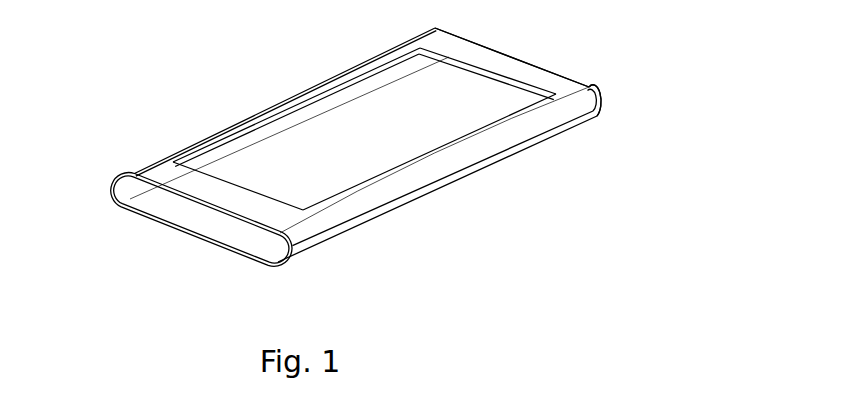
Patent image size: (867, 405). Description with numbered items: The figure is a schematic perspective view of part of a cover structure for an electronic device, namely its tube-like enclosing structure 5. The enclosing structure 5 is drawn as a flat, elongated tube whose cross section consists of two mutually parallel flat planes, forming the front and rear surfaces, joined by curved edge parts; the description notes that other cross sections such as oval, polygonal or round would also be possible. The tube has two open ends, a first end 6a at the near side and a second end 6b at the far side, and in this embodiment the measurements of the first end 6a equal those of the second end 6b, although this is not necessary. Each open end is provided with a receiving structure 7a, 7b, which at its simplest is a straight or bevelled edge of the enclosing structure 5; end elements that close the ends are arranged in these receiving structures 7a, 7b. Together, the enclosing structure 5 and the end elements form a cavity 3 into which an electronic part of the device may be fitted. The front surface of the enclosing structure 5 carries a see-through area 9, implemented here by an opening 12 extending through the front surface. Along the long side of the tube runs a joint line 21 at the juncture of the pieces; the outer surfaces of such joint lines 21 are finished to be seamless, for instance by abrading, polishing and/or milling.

The see-through area 9 is at (165, 90).
The cavity 3 is at (305, 150).
The enclosing structure 5 is at (153, 172).
The opening 12 is at (363, 117).
The joint line 21 is at (427, 190).
The first end 6a is at (135, 237).
The second end 6b is at (537, 28).
The receiving structure 7a is at (197, 260).
The receiving structure 7b is at (583, 70).